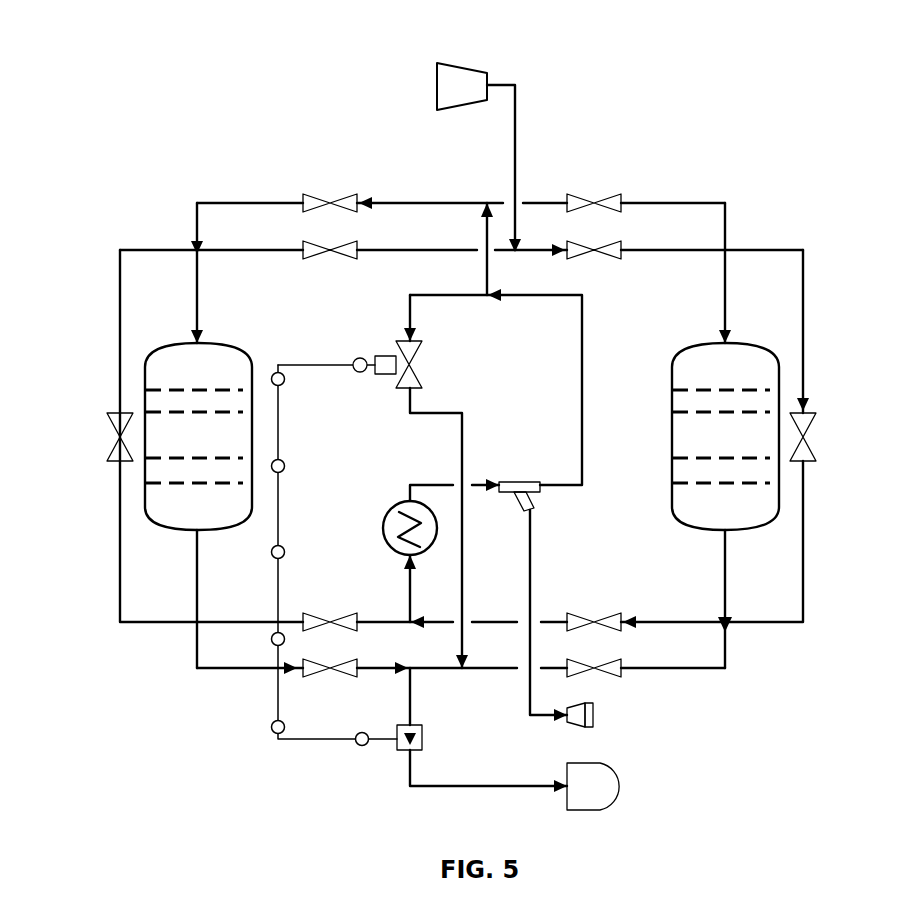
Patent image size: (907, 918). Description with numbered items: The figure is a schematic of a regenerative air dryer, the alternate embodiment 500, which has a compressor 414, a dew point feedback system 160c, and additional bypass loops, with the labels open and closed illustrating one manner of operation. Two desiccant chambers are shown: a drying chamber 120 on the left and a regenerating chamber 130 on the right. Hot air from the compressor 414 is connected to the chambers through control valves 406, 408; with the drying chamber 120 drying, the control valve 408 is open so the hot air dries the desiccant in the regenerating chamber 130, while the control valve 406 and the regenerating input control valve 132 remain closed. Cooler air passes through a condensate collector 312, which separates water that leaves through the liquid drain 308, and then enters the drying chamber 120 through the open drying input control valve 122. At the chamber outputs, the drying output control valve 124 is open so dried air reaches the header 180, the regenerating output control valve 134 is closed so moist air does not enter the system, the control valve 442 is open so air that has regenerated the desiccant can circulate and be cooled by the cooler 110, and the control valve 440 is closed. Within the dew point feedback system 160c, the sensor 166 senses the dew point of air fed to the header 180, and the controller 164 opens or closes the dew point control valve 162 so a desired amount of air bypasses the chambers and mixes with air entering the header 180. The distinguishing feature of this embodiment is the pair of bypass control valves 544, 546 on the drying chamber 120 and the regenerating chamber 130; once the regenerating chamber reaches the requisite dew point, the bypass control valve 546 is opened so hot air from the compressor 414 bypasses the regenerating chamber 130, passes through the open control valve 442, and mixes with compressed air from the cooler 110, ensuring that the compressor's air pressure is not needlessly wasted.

The alternate embodiment 500 is at (742, 78).
The compressor 414 is at (460, 88).
The drying input control valve 122 is at (305, 200).
The control valve 406 is at (307, 255).
The regenerating input control valve 132 is at (617, 200).
The control valve 408 is at (615, 256).
The drying chamber 120 is at (150, 348).
The regenerating chamber 130 is at (772, 345).
The bypass control valve 544 is at (118, 424).
The bypass control valve 546 is at (802, 418).
The dew point feedback system 160c is at (480, 363).
The dew point control valve 162 is at (397, 345).
The controller 164 is at (375, 360).
The condensate collector 312 is at (522, 488).
The cooler 110 is at (398, 518).
The control valve 440 is at (350, 620).
The control valve 442 is at (572, 622).
The drying output control valve 124 is at (350, 674).
The regenerating output control valve 134 is at (612, 674).
The sensor 166 is at (398, 748).
The liquid drain 308 is at (580, 713).
The header 180 is at (595, 786).